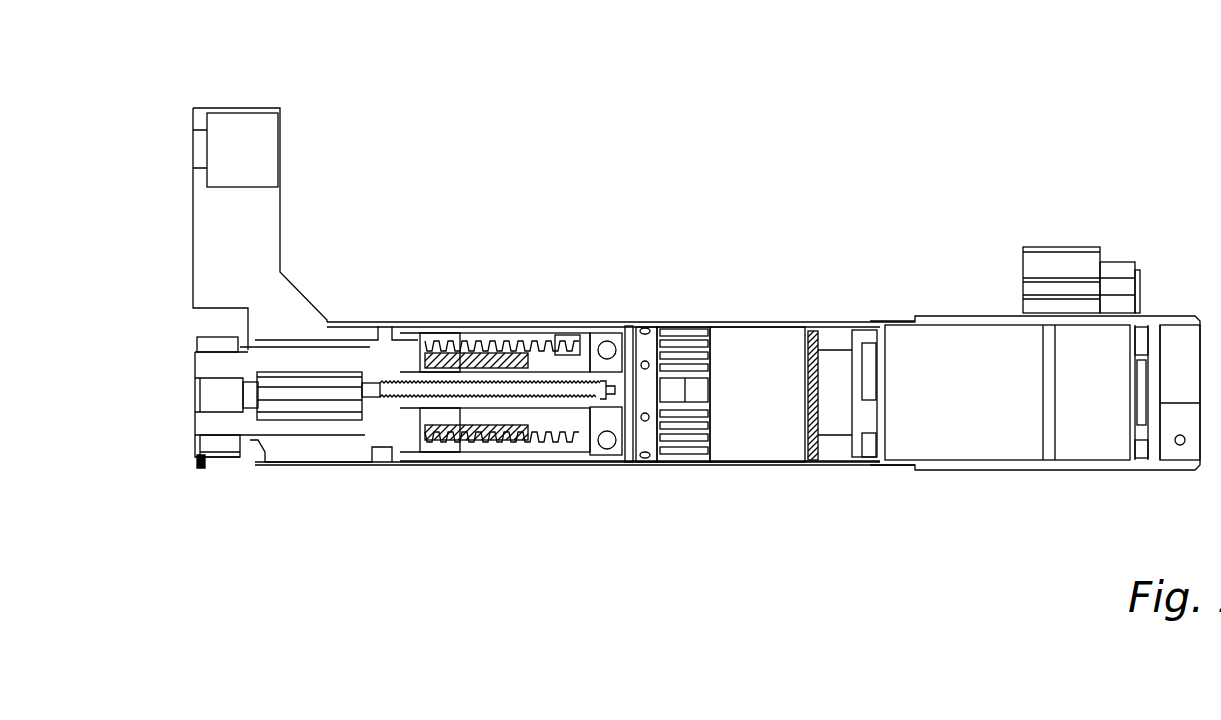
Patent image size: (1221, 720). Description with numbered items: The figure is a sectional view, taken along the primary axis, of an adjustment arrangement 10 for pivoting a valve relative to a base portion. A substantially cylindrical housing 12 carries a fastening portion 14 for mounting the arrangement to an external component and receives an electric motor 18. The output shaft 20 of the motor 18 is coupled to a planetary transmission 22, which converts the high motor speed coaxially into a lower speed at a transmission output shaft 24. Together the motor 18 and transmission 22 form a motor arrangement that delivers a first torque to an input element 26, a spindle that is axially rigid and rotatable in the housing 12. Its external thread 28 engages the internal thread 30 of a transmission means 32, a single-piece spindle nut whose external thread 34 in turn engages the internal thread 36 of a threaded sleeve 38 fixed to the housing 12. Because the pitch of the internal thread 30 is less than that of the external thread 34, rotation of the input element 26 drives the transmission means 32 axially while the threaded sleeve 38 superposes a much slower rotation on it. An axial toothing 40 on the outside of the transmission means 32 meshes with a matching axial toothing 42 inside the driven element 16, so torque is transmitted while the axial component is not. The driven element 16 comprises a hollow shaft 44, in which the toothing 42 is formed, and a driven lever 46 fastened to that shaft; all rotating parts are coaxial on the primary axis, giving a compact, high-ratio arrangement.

The adjustment arrangement 10 is at (1076, 128).
The housing 12 is at (422, 325).
The fastening portion 14 is at (270, 212).
The driven element 16 is at (196, 470).
The motor 18 is at (968, 407).
The output shaft 20 is at (842, 377).
The transmission 22 is at (772, 407).
The transmission output shaft 24 is at (615, 372).
The input element 26 is at (582, 408).
The external thread 28 is at (547, 410).
The internal thread 30 is at (535, 400).
The transmission means 32 is at (497, 410).
The external thread 34 is at (552, 340).
The internal thread 36 is at (567, 340).
The threaded sleeve 38 is at (525, 333).
The axial toothing 40 is at (355, 397).
The axial toothing 42 is at (337, 398).
The hollow shaft 44 is at (290, 432).
The driven lever 46 is at (228, 448).